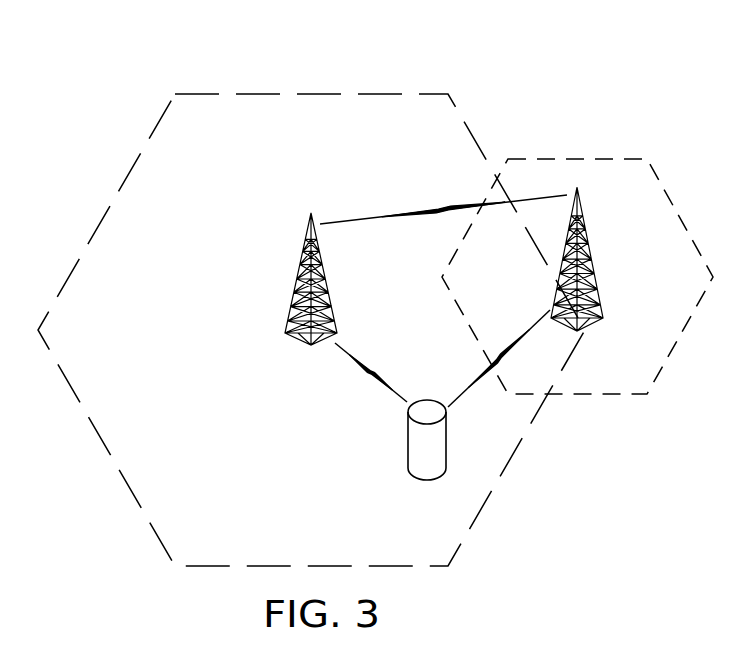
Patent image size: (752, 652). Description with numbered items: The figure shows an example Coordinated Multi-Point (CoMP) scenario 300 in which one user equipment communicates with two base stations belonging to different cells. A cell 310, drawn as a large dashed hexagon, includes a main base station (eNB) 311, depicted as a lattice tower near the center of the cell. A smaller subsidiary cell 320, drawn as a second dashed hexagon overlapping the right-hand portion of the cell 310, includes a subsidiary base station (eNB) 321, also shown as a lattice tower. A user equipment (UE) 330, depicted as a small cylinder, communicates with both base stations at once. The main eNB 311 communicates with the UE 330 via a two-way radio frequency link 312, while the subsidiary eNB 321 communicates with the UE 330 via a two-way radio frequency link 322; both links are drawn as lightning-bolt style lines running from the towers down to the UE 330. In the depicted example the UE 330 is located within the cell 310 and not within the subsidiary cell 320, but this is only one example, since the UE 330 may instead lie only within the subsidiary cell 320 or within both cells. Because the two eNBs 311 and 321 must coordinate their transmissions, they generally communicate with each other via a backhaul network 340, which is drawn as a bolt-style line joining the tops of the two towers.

The CoMP scenario 300 is at (95, 72).
The cell 310 is at (98, 436).
The main base station (eNB) 311 is at (297, 277).
The two-way radio frequency link 312 is at (356, 364).
The subsidiary cell 320 is at (607, 396).
The subsidiary base station (eNB) 321 is at (591, 248).
The two-way radio frequency link 322 is at (527, 333).
The user equipment (UE) 330 is at (425, 483).
The backhaul network 340 is at (408, 212).